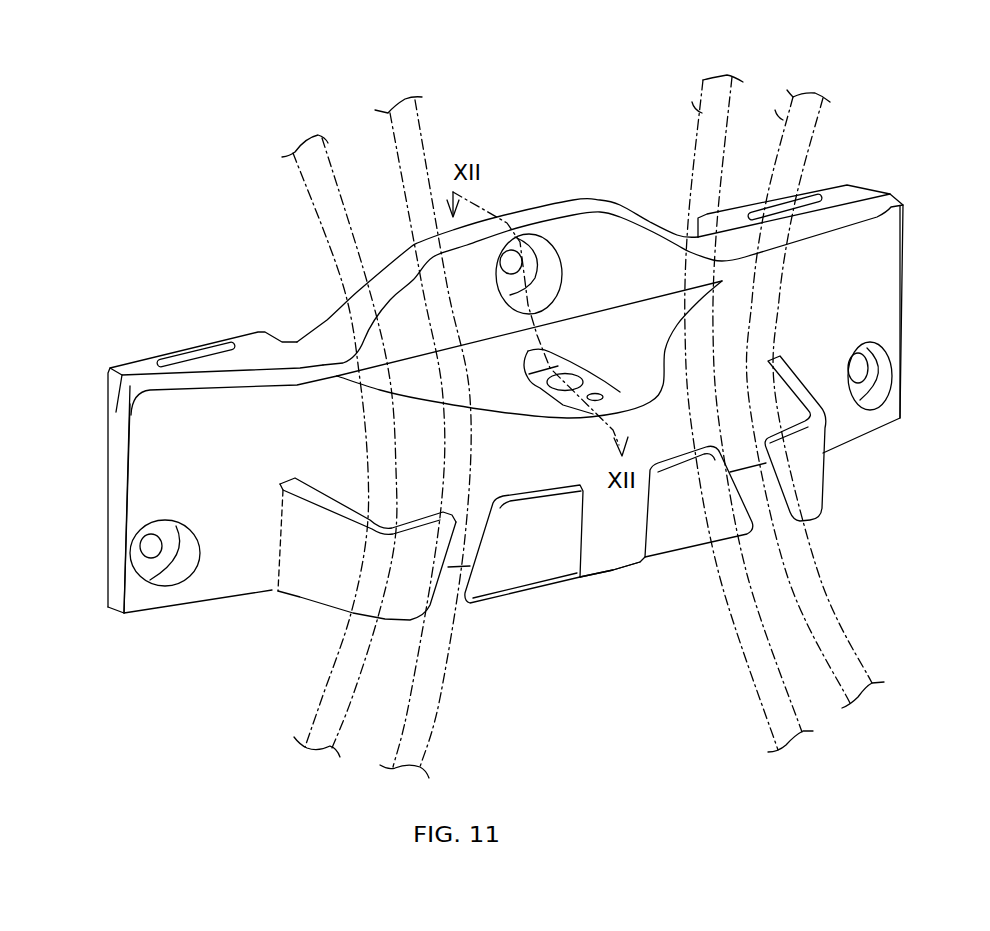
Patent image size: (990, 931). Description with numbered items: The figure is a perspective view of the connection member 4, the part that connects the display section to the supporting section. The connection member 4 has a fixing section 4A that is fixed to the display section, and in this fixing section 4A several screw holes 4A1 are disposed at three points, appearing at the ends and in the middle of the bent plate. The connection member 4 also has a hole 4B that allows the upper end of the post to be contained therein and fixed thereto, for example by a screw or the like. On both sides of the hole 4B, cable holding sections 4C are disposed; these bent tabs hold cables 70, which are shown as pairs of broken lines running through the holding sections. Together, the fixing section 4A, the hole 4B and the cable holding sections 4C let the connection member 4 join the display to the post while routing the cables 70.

The connection member 4 is at (891, 62).
The fixing section 4A is at (141, 480).
The screw hole 4A1 is at (142, 556).
The hole 4B is at (617, 576).
The cable holding section 4C is at (340, 567).
The cable 70 is at (337, 167).